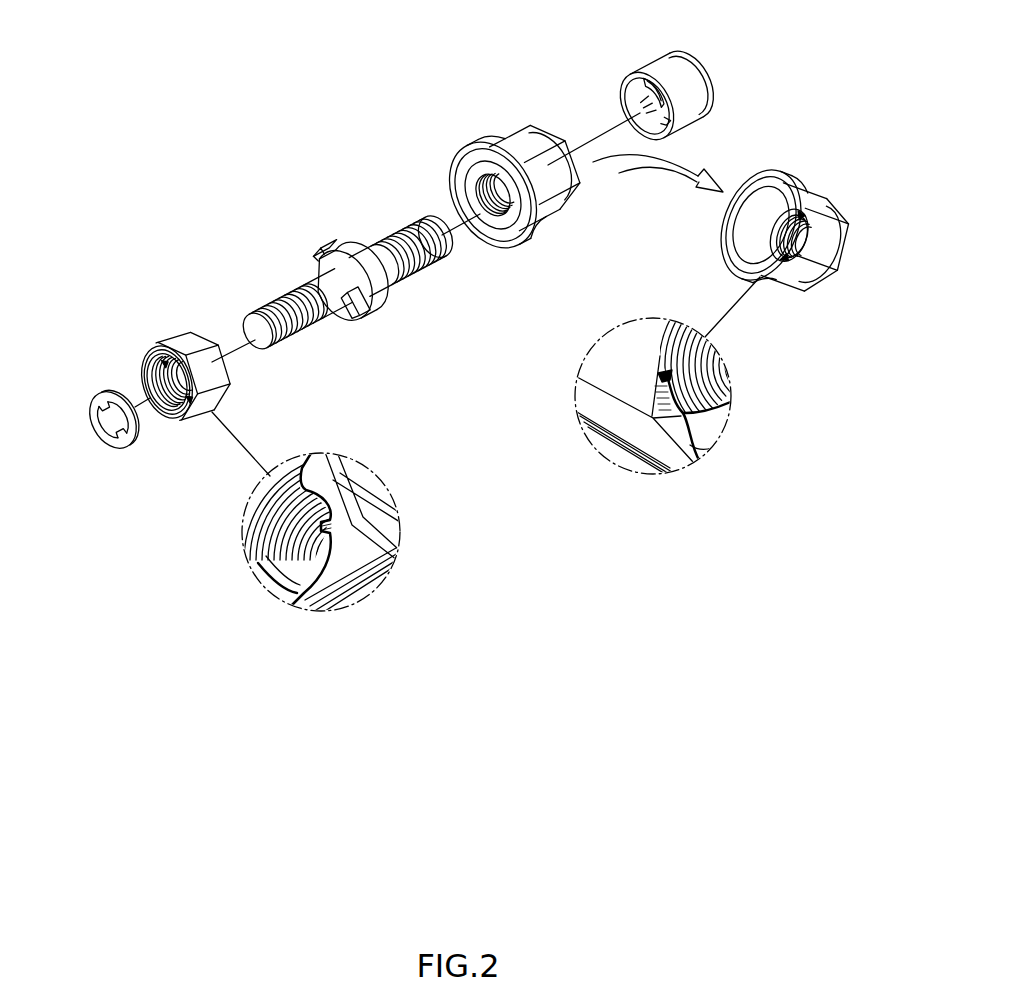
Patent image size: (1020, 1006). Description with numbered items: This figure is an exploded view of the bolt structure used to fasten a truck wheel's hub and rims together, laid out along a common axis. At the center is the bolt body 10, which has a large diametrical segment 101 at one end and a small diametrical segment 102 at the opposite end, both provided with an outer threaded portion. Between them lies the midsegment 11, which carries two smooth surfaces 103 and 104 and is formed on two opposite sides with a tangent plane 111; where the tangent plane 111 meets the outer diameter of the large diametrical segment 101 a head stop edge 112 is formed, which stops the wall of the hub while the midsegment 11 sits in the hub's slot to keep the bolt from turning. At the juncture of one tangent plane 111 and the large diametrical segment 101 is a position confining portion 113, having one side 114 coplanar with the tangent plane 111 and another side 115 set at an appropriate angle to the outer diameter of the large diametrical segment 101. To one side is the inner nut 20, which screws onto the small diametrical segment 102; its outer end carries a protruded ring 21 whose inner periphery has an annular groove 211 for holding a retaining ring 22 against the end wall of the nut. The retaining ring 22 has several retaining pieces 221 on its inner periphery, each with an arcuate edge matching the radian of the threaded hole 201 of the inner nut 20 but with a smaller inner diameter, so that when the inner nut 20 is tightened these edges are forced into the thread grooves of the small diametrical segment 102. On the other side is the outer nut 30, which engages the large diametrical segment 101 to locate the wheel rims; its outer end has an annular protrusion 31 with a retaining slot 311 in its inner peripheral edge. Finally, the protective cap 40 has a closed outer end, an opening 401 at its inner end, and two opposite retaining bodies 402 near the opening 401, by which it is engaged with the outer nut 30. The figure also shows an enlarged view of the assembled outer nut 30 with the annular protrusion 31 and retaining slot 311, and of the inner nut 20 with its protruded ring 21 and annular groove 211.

The bolt body 10 is at (203, 207).
The large diametrical segment 101 is at (380, 200).
The small diametrical segment 102 is at (288, 270).
The smooth surface 103 is at (387, 292).
The smooth surface 104 is at (327, 310).
The midsegment 11 is at (392, 342).
The tangent plane 111 is at (317, 265).
The head stop edge 112 is at (363, 307).
The position confining portion 113 is at (330, 247).
The side of position confining portion 114 is at (318, 247).
The other side of position confining portion 115 is at (347, 253).
The inner nut 20 is at (193, 327).
The threaded hole 201 is at (163, 337).
The protruded ring 21 is at (147, 357).
The annular groove 211 is at (185, 427).
The retaining ring 22 is at (78, 380).
The retaining pieces 221 is at (107, 390).
The outer nut 30 is at (508, 133).
The annular protrusion 31 is at (833, 233).
The retaining slot 311 is at (800, 213).
The protective cap 40 is at (653, 60).
The opening 401 is at (628, 97).
The retaining bodies 402 is at (625, 130).